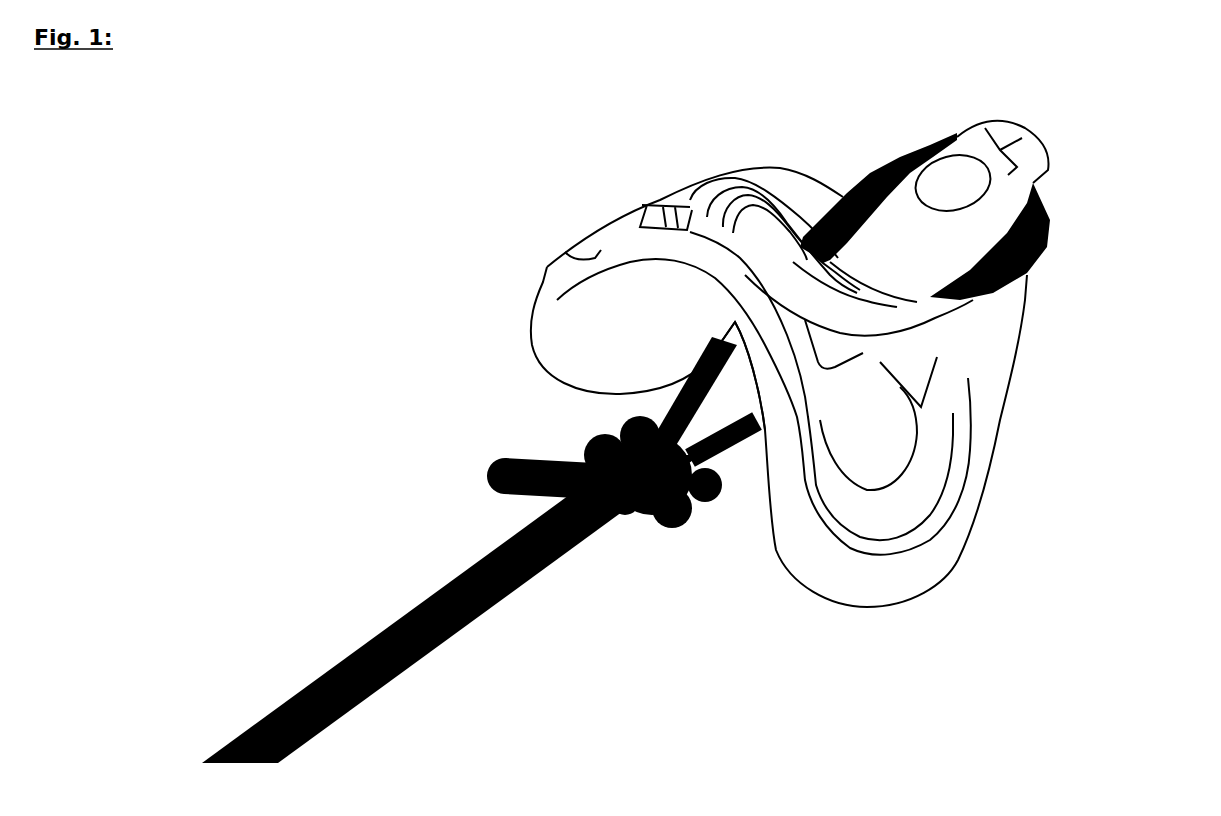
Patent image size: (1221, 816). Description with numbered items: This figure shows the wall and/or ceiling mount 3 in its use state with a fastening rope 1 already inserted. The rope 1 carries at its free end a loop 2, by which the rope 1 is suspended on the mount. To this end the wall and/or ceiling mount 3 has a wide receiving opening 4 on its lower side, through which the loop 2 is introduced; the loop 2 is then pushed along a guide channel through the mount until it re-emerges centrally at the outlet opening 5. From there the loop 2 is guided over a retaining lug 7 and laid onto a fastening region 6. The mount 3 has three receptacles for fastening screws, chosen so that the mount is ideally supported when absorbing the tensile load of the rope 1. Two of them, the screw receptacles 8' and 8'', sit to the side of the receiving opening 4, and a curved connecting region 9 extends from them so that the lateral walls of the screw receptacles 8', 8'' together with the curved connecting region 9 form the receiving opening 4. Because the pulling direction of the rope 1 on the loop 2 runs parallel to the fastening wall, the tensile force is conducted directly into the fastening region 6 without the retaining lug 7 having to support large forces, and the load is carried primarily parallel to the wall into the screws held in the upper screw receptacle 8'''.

The rope 1 is at (382, 718).
The loop 2 is at (1027, 270).
The wall and/or ceiling mount 3 is at (1028, 510).
The receiving opening 4 is at (667, 400).
The outlet opening 5 is at (793, 220).
The fastening region 6 is at (957, 130).
The retaining lug 7 is at (1057, 163).
The screw receptacle 8' is at (517, 211).
The screw receptacle 8'' is at (964, 510).
The upper screw receptacle 8''' is at (1034, 203).
The curved connecting region 9 is at (737, 322).